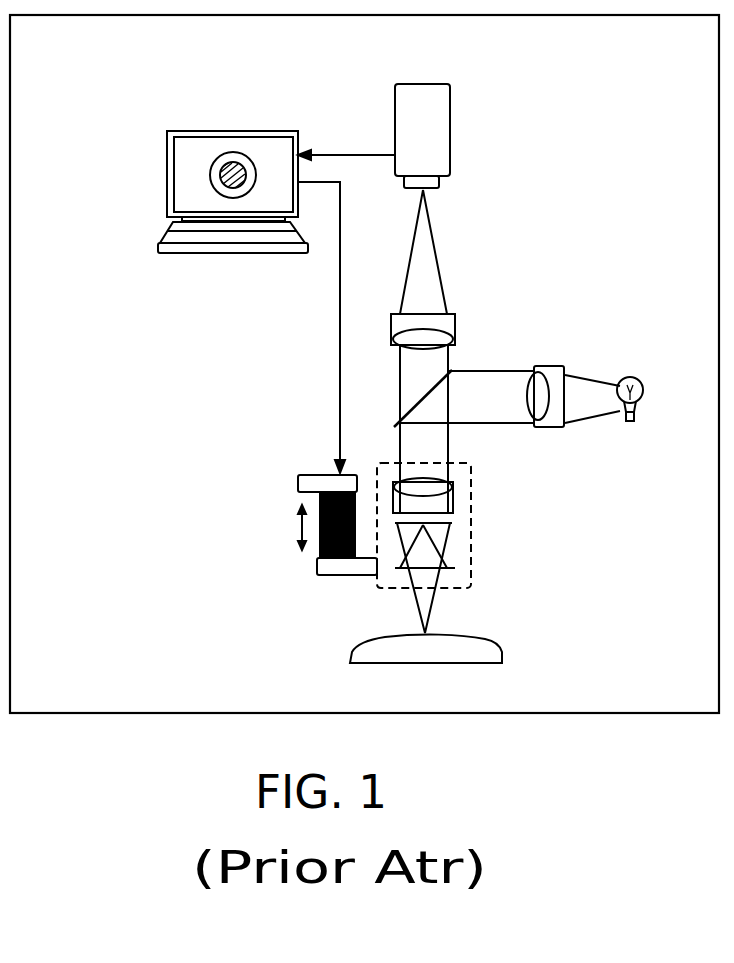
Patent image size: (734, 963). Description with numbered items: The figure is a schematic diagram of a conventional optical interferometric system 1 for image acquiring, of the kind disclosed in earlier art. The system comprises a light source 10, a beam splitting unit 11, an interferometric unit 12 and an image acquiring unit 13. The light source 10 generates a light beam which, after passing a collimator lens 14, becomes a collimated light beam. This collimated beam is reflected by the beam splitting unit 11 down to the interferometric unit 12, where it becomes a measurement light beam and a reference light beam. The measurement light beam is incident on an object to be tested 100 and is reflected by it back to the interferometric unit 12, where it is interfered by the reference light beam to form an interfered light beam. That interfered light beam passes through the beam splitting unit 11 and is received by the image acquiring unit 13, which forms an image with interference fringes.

The optical interferometric system 1 is at (156, 124).
The light source 10 is at (632, 378).
The beam splitting unit 11 is at (452, 370).
The interferometric unit 12 is at (472, 540).
The image acquiring unit 13 is at (432, 150).
The collimator lens 14 is at (557, 368).
The object to be tested 100 is at (480, 655).